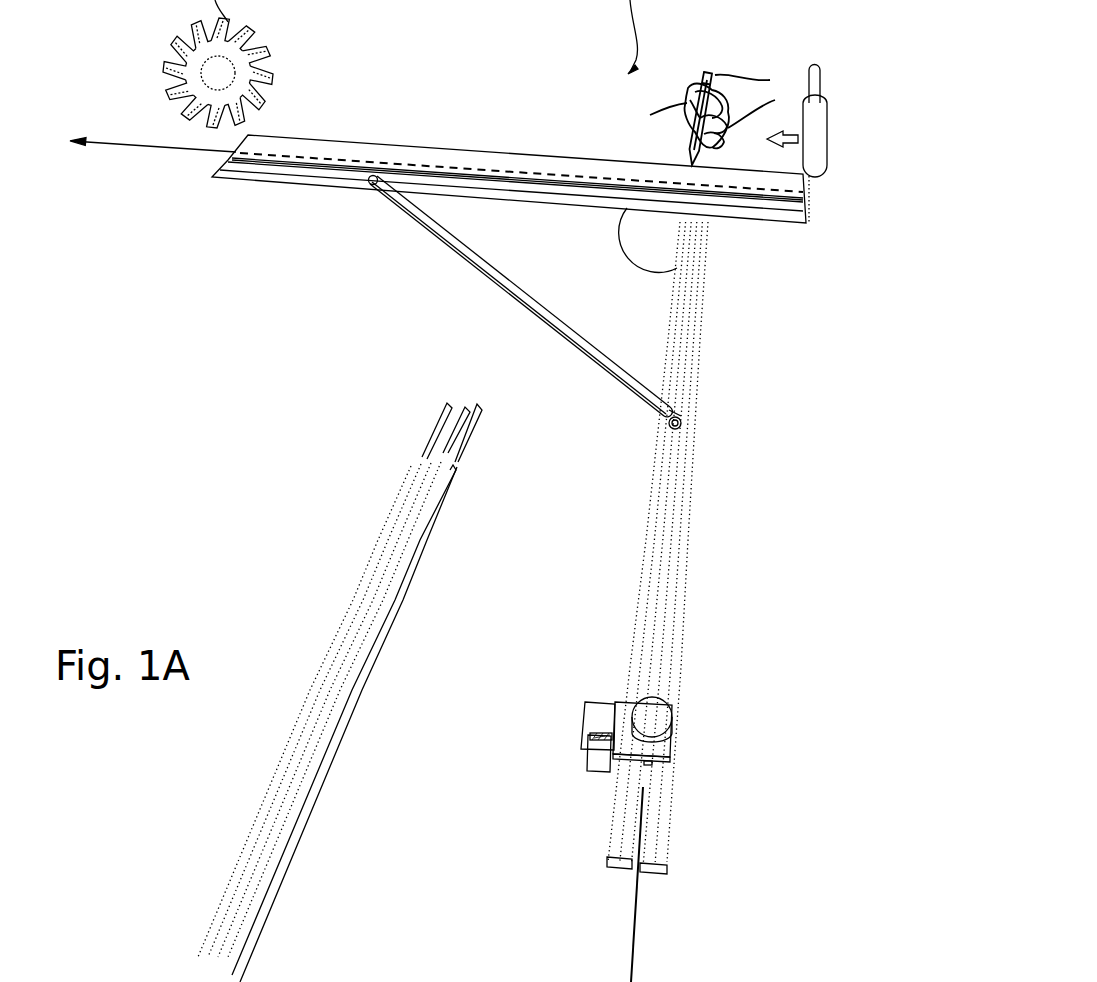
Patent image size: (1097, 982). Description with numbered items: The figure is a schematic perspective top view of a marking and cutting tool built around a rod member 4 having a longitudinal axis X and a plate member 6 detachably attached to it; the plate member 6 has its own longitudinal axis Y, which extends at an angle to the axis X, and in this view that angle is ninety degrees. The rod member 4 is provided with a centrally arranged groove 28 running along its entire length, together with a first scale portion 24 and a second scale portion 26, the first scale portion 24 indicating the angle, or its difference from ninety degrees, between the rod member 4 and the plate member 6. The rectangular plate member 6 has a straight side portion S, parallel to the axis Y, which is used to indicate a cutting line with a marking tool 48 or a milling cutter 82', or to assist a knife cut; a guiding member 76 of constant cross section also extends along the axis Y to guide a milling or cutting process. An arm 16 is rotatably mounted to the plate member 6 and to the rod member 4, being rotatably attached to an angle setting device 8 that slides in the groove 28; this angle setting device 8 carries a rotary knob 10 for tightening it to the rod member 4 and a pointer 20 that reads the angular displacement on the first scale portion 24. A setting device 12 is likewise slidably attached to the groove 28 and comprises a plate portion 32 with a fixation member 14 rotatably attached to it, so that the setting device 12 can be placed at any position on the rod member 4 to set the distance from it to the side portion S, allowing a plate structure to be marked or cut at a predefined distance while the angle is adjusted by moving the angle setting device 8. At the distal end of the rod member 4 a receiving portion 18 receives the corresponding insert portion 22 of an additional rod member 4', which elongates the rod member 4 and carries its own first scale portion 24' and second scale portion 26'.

The rod member 4 is at (717, 542).
The additional rod member 4' is at (291, 717).
The plate member 6 is at (500, 163).
The angle setting device 8 is at (708, 403).
The rotary knob 10 is at (680, 417).
The setting device 12 is at (683, 732).
The fixation member 14 is at (587, 723).
The arm 16 is at (457, 260).
The receiving portion 18 is at (622, 866).
The pointer 20 is at (682, 437).
The insert portion 22 is at (473, 422).
The first scale portion 24 is at (726, 542).
The first scale portion 24' is at (380, 724).
The second scale portion 26 is at (614, 542).
The second scale portion 26' is at (324, 710).
The groove 28 is at (655, 650).
The plate portion 32 is at (660, 750).
The marking tool 48 is at (686, 110).
The guiding member 76 is at (308, 167).
The milling cutter 82' is at (856, 121).
The straight side portion S is at (415, 140).
The longitudinal axis X is at (635, 940).
The longitudinal axis Y is at (120, 146).